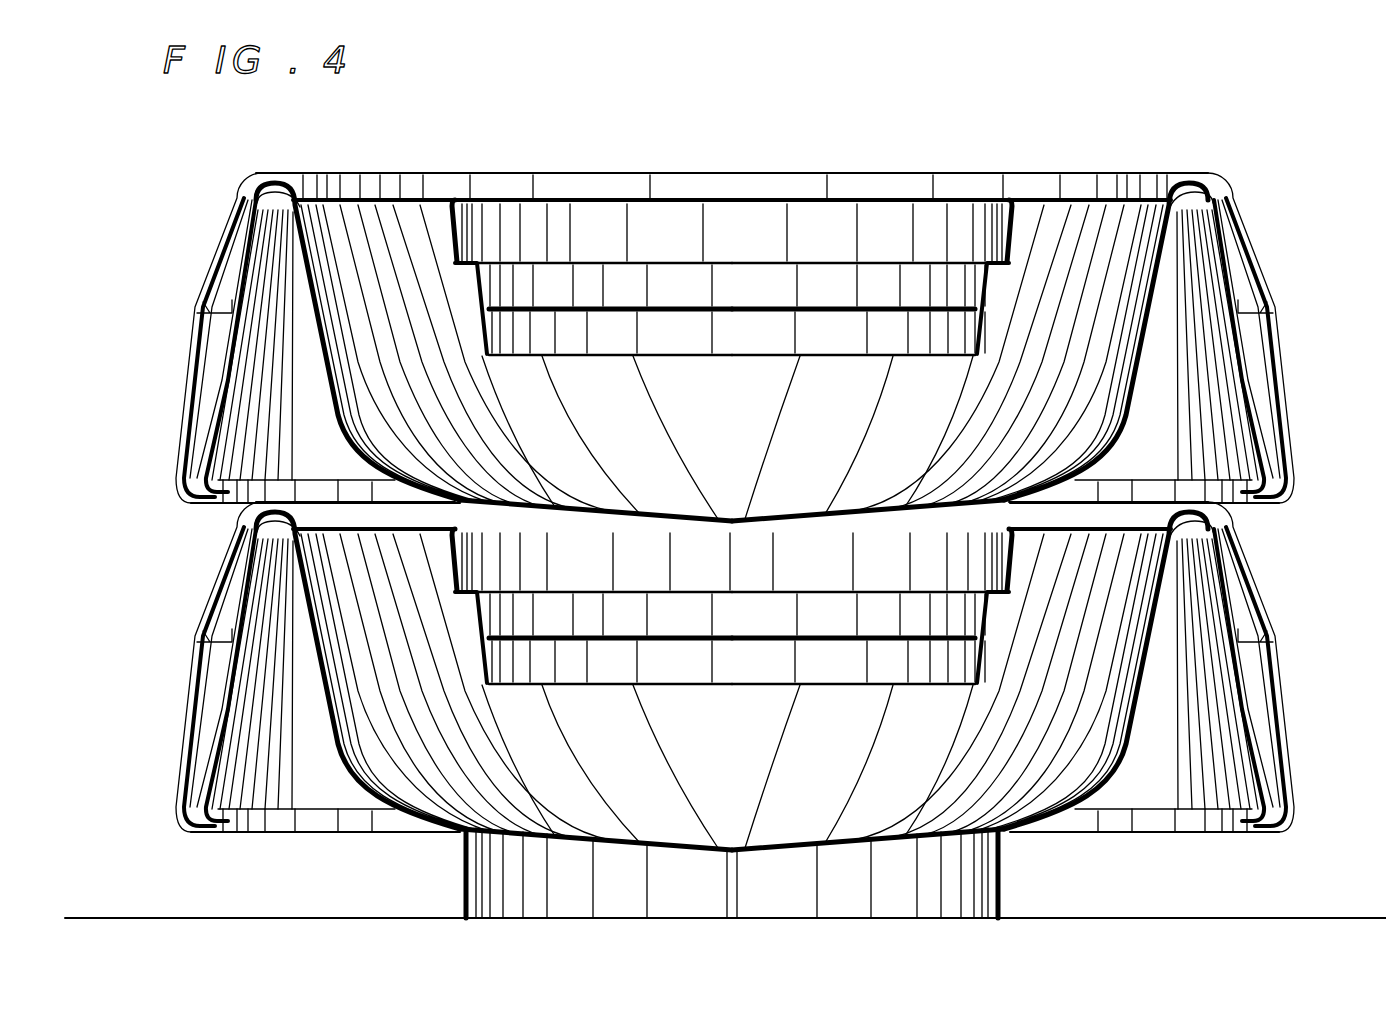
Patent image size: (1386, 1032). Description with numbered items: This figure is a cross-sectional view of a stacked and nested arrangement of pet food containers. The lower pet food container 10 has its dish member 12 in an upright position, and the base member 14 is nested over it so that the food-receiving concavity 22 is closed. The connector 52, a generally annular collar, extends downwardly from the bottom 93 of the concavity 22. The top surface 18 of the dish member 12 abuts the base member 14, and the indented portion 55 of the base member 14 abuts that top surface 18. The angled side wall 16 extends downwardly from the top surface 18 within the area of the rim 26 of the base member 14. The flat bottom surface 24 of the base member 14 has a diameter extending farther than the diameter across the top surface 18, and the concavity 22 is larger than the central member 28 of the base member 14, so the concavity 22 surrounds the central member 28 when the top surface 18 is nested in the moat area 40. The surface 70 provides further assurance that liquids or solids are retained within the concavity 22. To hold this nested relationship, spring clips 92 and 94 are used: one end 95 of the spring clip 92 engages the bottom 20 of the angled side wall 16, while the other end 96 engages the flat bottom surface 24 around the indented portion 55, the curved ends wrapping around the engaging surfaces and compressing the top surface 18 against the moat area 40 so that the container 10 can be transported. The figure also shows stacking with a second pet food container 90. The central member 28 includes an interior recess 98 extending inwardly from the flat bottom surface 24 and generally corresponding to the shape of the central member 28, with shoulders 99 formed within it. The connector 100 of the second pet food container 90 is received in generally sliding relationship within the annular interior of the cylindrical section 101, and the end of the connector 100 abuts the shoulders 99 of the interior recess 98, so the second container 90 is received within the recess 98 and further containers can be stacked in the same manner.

The pet food container 10 is at (725, 671).
The dish member 12 is at (357, 774).
The base member 14 is at (363, 531).
The angled side wall 16 is at (214, 738).
The top surface 18 is at (251, 530).
The bottom of the angled side wall 20 is at (184, 815).
The concavity 22 is at (317, 678).
The flat bottom surface 24 is at (1171, 497).
The rim 26 is at (207, 642).
The central member 28 is at (835, 641).
The moat area 40 is at (1110, 536).
The connector 52 is at (463, 878).
The indented portion 55 is at (262, 488).
The surface 70 is at (648, 635).
The second pet food container 90 is at (695, 347).
The spring clip 92 is at (180, 797).
The bottom 93 is at (562, 832).
The spring clip 94 is at (1282, 738).
The end of the spring clip 95 is at (206, 833).
The other end of the spring clip 96 is at (305, 517).
The interior recess 98 is at (478, 600).
The shoulders 99 is at (1002, 578).
The connector 100 is at (470, 535).
The cylindrical section 101 is at (1013, 562).